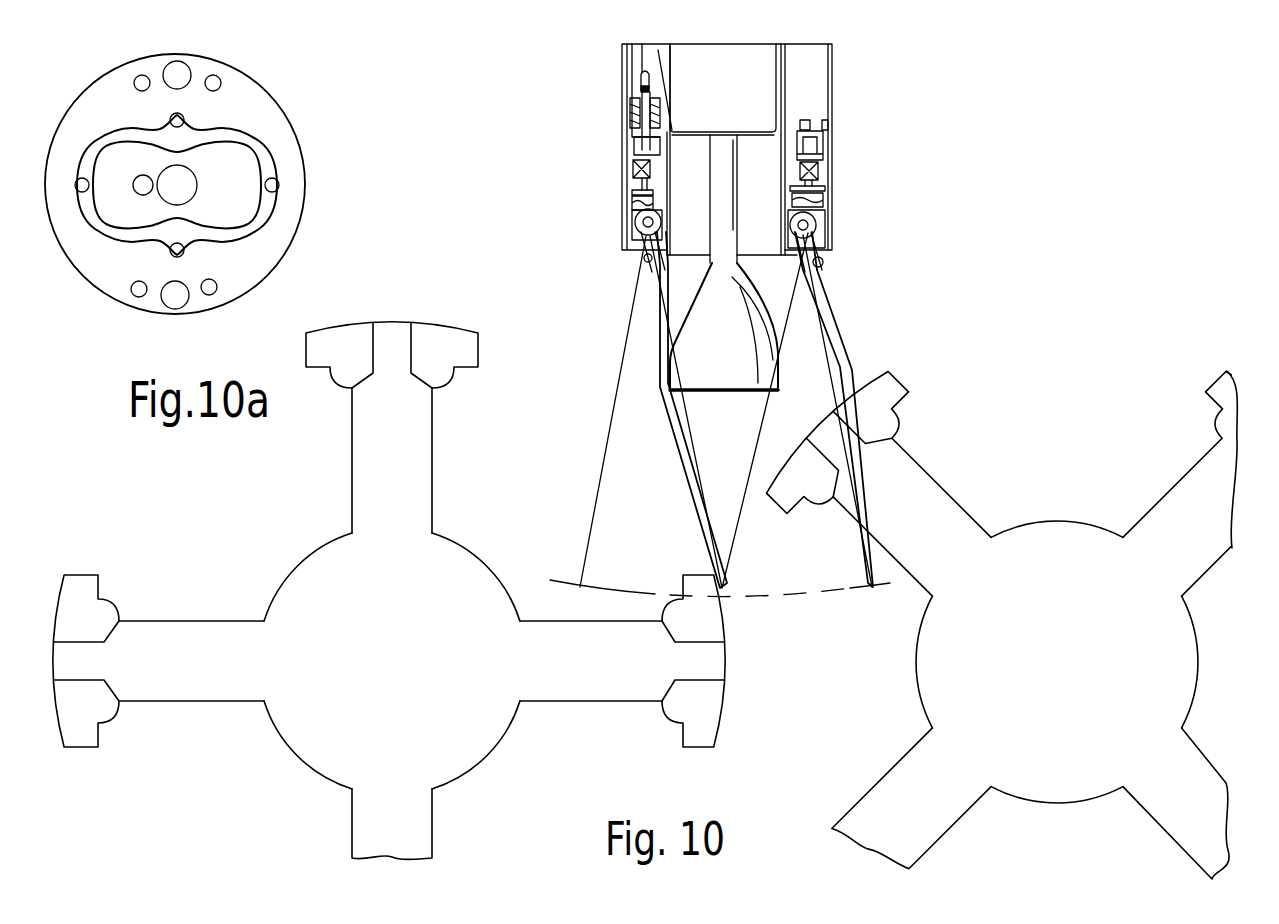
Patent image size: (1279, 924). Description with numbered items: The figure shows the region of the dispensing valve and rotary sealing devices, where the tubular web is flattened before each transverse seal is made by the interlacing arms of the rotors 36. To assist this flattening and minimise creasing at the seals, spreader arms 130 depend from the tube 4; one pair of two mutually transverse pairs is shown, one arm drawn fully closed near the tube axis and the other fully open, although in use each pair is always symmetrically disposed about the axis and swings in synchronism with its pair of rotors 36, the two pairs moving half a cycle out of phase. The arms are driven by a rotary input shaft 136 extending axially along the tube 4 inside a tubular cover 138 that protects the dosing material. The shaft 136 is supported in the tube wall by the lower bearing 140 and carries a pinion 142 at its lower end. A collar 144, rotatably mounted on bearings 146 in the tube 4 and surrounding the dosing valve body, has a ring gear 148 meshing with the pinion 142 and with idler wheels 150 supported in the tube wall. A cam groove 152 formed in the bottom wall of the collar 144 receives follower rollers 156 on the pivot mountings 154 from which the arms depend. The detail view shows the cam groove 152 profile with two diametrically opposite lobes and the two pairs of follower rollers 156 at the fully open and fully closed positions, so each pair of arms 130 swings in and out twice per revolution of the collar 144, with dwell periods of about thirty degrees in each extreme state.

In FIG. 10, the tube 4 is at (815, 63).
In FIG. 10, the rotors 36 is at (308, 563).
In FIG. 10, the spreader arms 130 is at (668, 417).
In FIG. 10, the rotary input shaft 136 is at (640, 90).
In FIG. 10, the tubular cover 138 is at (634, 51).
In FIG. 10, the lower bearing 140 is at (630, 125).
In FIG. 10, the pinion 142 is at (637, 142).
In FIG. 10A, the collar 144 is at (120, 115).
In FIG. 10, the collar 144 is at (795, 183).
In FIG. 10, the bearings 146 is at (820, 173).
In FIG. 10, the ring gear 148 is at (810, 130).
In FIG. 10, the idler wheels 150 is at (817, 143).
In FIG. 10A, the cam groove 152 is at (247, 145).
In FIG. 10, the cam groove 152 is at (803, 195).
In FIG. 10, the pivot mountings 154 is at (643, 243).
In FIG. 10A, the follower rollers 156 is at (180, 117).
In FIG. 10, the follower rollers 156 is at (640, 203).